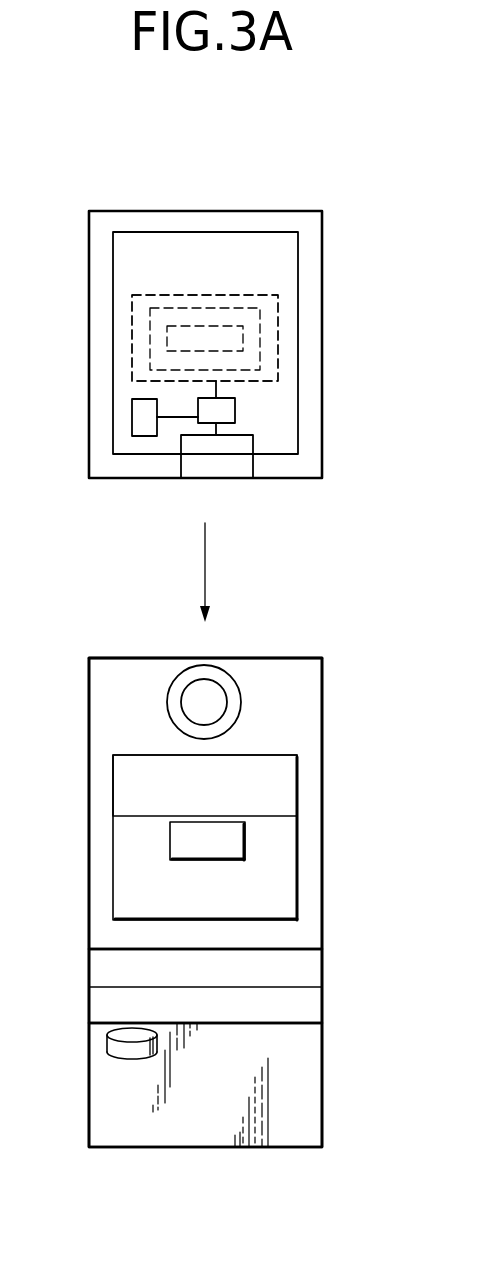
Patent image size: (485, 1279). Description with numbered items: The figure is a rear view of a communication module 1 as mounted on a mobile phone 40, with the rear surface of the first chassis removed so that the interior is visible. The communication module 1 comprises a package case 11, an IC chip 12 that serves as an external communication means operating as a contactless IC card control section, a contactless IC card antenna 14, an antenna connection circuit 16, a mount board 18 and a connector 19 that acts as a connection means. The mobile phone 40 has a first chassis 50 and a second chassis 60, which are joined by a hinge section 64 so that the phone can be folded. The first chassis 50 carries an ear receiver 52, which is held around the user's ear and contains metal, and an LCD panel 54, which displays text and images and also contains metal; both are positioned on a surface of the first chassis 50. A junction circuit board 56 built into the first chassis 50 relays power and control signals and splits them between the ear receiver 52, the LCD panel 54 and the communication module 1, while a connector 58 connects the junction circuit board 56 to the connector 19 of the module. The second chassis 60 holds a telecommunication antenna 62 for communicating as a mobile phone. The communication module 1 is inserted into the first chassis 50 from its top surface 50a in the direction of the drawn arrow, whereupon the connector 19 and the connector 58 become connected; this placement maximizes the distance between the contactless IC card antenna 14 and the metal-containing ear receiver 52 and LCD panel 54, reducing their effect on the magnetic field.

The communication module 1 is at (322, 186).
The package case 11 is at (322, 329).
The IC chip 12 is at (143, 430).
The contactless IC card antenna 14 is at (200, 293).
The antenna connection circuit 16 is at (227, 412).
The mount board 18 is at (122, 388).
The connector 19 is at (217, 468).
The mobile phone 40 is at (338, 628).
The first chassis 50 is at (312, 890).
The top surface 50a is at (145, 657).
The ear receiver 52 is at (213, 701).
The LCD panel 54 is at (282, 802).
The junction circuit board 56 is at (127, 903).
The connector 58 is at (188, 842).
The second chassis 60 is at (312, 1085).
The telecommunication antenna 62 is at (117, 1050).
The hinge section 64 is at (312, 968).